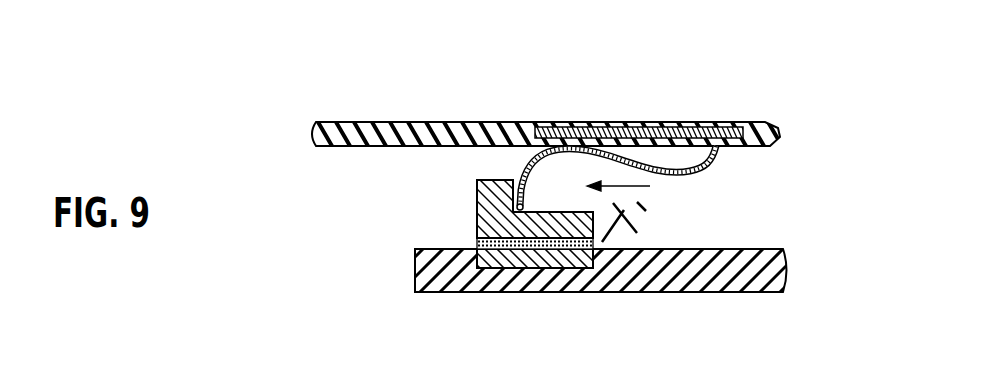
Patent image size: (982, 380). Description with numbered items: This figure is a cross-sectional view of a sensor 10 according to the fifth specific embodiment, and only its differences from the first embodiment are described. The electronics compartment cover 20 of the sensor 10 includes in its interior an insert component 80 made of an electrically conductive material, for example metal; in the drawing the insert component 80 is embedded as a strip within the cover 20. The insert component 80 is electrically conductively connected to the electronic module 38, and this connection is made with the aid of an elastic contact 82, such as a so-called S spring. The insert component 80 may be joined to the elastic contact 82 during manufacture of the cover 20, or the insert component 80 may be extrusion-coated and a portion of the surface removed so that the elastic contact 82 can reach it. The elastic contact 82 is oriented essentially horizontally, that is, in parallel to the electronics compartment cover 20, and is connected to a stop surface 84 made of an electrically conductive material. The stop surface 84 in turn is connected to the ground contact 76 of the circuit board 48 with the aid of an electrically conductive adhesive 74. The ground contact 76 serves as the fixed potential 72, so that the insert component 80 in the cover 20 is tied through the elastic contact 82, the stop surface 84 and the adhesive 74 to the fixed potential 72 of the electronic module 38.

The sensor 10 is at (780, 72).
The electronics compartment cover 20 is at (399, 131).
The electronic module 38 is at (410, 263).
The circuit board 48 is at (686, 270).
The fixed potential 72 is at (640, 214).
The electrically conductive adhesive 74 is at (476, 243).
The ground contact 76 is at (538, 265).
The insert component 80 is at (648, 128).
The elastic contact 82 is at (702, 170).
The stop surface 84 is at (476, 191).